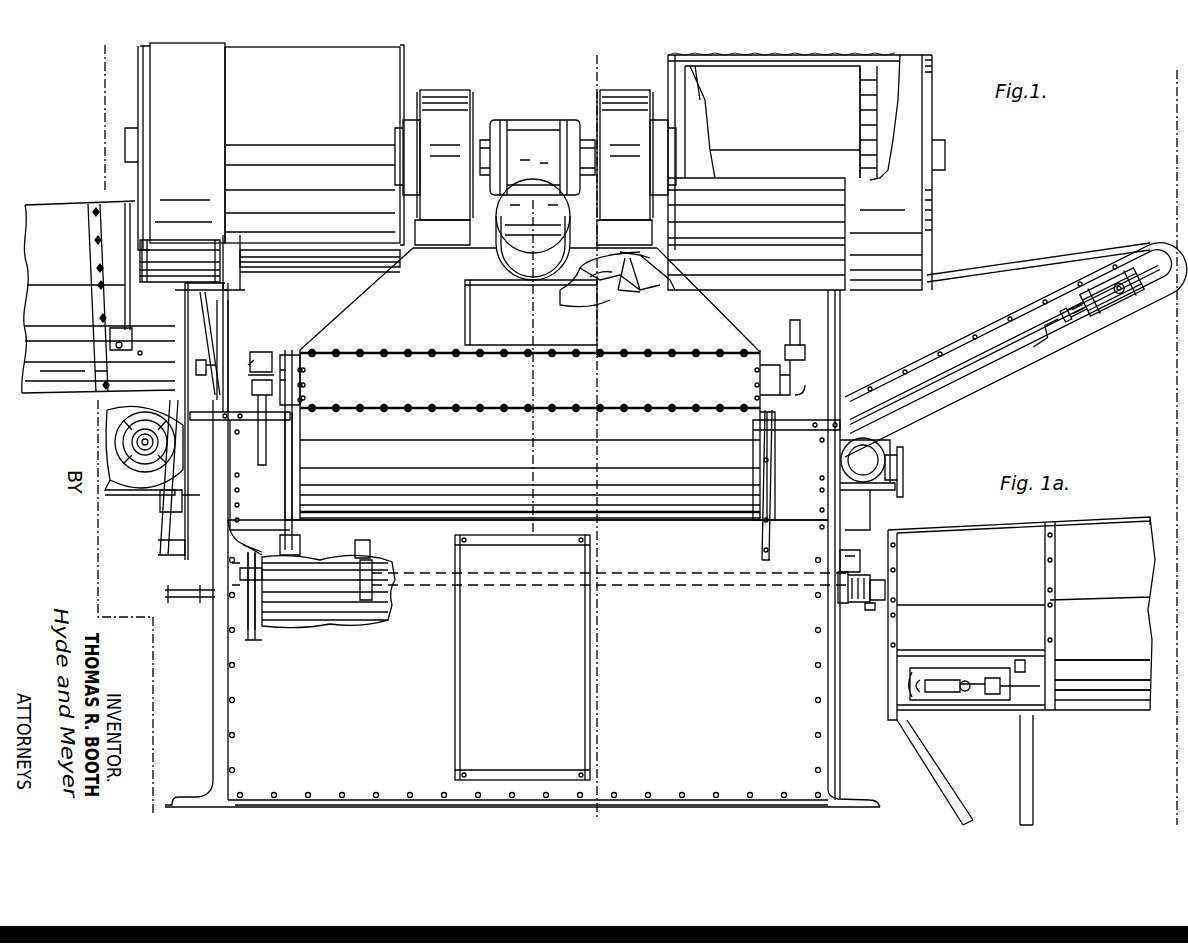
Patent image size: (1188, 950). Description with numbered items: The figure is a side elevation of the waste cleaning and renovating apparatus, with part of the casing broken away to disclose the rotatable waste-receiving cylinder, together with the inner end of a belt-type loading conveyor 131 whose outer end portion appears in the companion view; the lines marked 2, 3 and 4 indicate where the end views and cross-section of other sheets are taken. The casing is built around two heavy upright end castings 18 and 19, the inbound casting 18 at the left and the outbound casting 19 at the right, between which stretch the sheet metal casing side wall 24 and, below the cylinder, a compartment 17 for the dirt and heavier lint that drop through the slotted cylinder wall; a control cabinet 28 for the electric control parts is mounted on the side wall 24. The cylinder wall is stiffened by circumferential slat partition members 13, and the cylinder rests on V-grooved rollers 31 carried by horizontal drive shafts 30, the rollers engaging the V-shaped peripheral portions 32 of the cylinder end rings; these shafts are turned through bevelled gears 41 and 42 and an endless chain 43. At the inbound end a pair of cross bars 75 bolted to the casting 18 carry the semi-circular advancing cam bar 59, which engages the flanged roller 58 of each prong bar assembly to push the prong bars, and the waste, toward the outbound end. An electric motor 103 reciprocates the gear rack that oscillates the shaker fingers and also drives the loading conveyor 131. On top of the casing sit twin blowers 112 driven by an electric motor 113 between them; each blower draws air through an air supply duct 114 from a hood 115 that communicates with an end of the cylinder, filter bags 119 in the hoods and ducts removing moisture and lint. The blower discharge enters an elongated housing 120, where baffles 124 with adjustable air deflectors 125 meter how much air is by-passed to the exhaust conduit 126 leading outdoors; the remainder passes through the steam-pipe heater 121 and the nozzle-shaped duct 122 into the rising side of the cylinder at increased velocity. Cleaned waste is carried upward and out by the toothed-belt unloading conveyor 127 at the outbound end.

In FIG. 1, the section line 2— 2 is at (98, 51).
In FIG. 1, the section line 3— 3 is at (1170, 70).
In FIG. 1, the section line 4— 4 is at (588, 62).
In FIG. 1, the slat partition members 13 is at (368, 625).
In FIG. 1, the compartment 17 is at (320, 635).
In FIG. 1, the inbound end casting 18 is at (218, 666).
In FIG. 1, the outbound end casting 19 is at (830, 668).
In FIG. 1, the casing side wall 24 is at (528, 662).
In FIG. 1, the control cabinet 28 is at (522, 657).
In FIG. 1, the drive shafts 30 is at (388, 572).
In FIG. 1, the V-grooved rollers 31 is at (240, 573).
In FIG. 1, the V-shaped peripheral portions 32 is at (248, 640).
In FIG. 1, the bevelled gear 41 is at (862, 565).
In FIG. 1, the bevelled gear 42 is at (870, 607).
In FIG. 1, the endless chain 43 is at (838, 598).
In FIG. 1, the flanged wheel or roller 58 is at (208, 368).
In FIG. 1, the advancing cam bar 59 is at (165, 540).
In FIG. 1, the cross bars 75 is at (168, 503).
In FIG. 1, the electric motor 103 is at (115, 433).
In FIG. 1, the twin blowers 112 is at (448, 97).
In FIG. 1, the electric motor 113 is at (536, 122).
In FIG. 1, the air supply duct 114 is at (740, 68).
In FIG. 1, the hood 115 is at (940, 88).
In FIG. 1, the filter bags 119 is at (790, 68).
In FIG. 1, the elongated housing 120 is at (372, 295).
In FIG. 1, the heater 121 is at (530, 381).
In FIG. 1, the duct 122 is at (703, 508).
In FIG. 1, the baffles 124 is at (575, 275).
In FIG. 1, the adjustable air deflectors 125 is at (630, 280).
In FIG. 1, the exhaust conduit 126 is at (500, 240).
In FIG. 1, the unloading conveyor 127 is at (1036, 376).
In FIG. 1, the loading conveyor 131 is at (60, 204).
In FIG. 1A, the loading conveyor 131 is at (1103, 716).